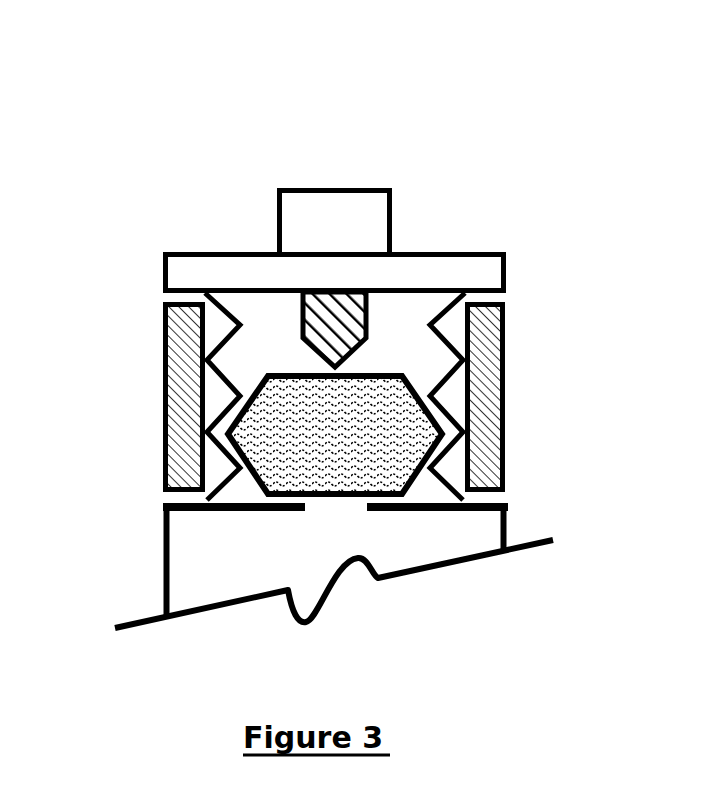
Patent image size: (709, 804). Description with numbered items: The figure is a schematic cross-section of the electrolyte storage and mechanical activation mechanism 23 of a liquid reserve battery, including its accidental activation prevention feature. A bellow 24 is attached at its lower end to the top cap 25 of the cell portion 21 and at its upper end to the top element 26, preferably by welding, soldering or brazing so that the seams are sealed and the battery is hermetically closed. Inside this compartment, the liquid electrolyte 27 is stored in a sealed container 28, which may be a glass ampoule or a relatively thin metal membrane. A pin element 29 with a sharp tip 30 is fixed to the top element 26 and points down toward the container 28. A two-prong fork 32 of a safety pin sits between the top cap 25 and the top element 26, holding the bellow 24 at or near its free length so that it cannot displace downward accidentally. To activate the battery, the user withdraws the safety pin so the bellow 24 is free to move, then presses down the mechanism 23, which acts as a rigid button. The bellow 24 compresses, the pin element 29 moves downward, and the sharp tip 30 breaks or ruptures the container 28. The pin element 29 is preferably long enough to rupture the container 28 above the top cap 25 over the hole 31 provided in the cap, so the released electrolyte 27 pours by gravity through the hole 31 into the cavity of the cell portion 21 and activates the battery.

The cell portion 21 is at (152, 566).
The electrolyte storage and mechanical activation mechanism 23 is at (330, 178).
The bellow 24 is at (430, 372).
The top cap 25 is at (441, 516).
The top element 26 is at (214, 236).
The liquid electrolyte 27 is at (380, 428).
The sealed container 28 is at (373, 314).
The pin element 29 is at (384, 360).
The sharp tip 30 is at (311, 357).
The hole 31 is at (343, 520).
The two-prong fork 32 is at (153, 414).